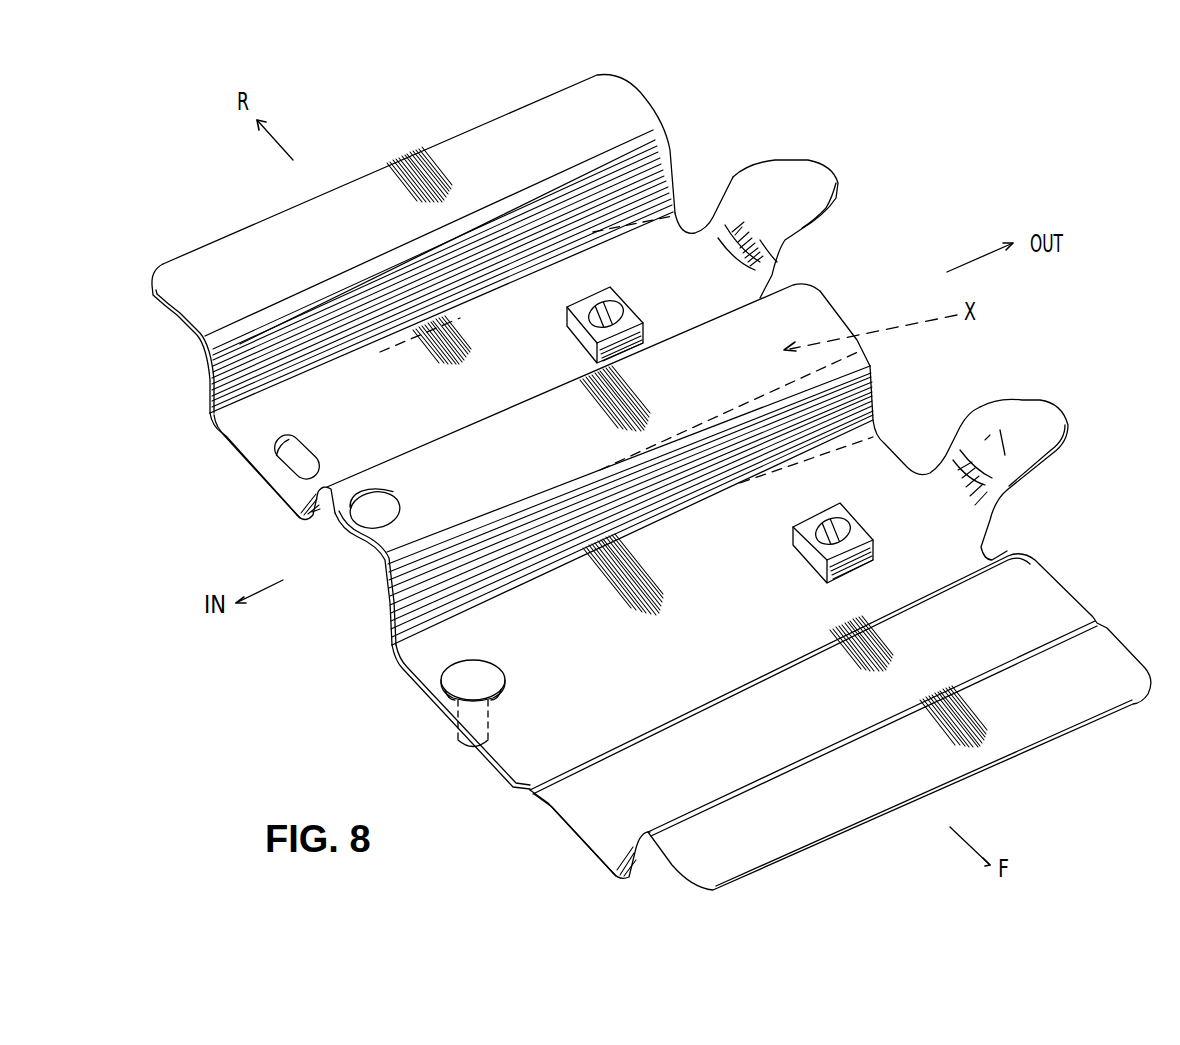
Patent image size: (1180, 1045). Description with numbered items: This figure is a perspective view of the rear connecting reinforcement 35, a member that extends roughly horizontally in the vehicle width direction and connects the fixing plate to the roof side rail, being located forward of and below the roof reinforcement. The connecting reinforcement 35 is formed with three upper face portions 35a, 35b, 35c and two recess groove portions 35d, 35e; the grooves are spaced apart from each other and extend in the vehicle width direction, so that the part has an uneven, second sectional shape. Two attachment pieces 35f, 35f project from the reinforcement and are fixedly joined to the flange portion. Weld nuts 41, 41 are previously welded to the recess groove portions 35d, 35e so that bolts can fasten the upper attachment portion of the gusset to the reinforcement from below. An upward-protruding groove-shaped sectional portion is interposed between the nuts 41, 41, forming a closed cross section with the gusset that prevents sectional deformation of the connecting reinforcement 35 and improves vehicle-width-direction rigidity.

The rear connecting reinforcement 35 is at (450, 117).
The upper face portion 35a is at (1107, 670).
The upper face portion 35b is at (807, 323).
The upper face portion 35c is at (630, 120).
The recess groove portion 35d is at (883, 457).
The recess groove portion 35e is at (672, 253).
The attachment piece 35f is at (773, 160).
The nut 41 is at (567, 313).